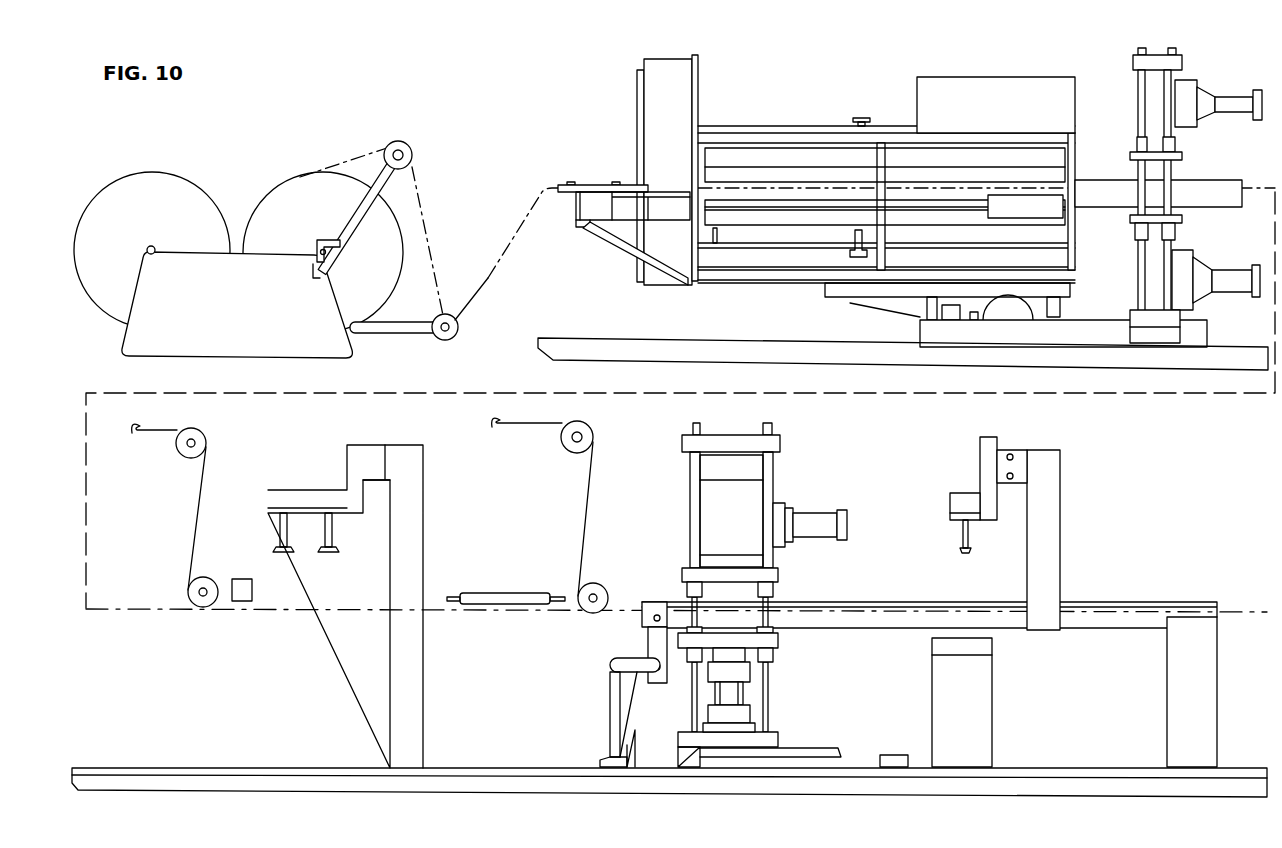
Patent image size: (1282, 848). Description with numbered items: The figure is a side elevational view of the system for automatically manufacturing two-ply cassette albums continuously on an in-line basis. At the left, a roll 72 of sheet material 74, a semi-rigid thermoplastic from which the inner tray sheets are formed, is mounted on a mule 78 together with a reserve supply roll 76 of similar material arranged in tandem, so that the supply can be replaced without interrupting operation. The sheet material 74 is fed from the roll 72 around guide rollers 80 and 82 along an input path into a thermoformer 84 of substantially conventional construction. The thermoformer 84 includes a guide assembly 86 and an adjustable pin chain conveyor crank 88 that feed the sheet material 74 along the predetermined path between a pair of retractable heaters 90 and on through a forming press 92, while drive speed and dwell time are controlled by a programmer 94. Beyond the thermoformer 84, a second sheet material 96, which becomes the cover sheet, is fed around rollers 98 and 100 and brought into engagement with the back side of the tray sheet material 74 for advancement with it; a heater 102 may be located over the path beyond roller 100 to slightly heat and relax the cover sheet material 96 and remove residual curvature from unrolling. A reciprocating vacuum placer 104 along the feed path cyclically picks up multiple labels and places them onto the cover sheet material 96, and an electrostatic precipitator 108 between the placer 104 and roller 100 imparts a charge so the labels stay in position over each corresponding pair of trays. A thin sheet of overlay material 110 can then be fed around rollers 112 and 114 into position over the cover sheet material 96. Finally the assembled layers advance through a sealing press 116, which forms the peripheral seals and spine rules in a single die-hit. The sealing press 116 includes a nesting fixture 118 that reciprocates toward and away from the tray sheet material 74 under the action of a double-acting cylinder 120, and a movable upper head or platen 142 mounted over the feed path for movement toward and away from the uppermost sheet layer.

The roll 72 is at (293, 187).
The sheet material 74 is at (418, 198).
The reserve supply roll 76 is at (183, 187).
The mule 78 is at (250, 327).
The guide roller 80 is at (401, 140).
The guide roller 82 is at (443, 338).
The thermoformer 84 is at (838, 100).
The guide assembly 86 is at (865, 239).
The adjustable pin chain conveyor crank 88 is at (632, 210).
The retractable heaters 90 is at (753, 170).
The forming press 92 is at (1193, 98).
The programmer 94 is at (940, 97).
The sheet material 96 is at (198, 520).
The roller 98 is at (185, 448).
The roller 100 is at (190, 602).
The heater 102 is at (483, 598).
The reciprocating vacuum placer 104 is at (331, 474).
The electrostatic precipitator 108 is at (250, 590).
The sheet of overlay material 110 is at (588, 517).
The roller 112 is at (570, 447).
The roller 114 is at (590, 583).
The sealing press 116 is at (797, 462).
The nesting fixture 118 is at (767, 640).
The double-acting cylinder 120 is at (730, 698).
The upper head or platen 142 is at (777, 577).